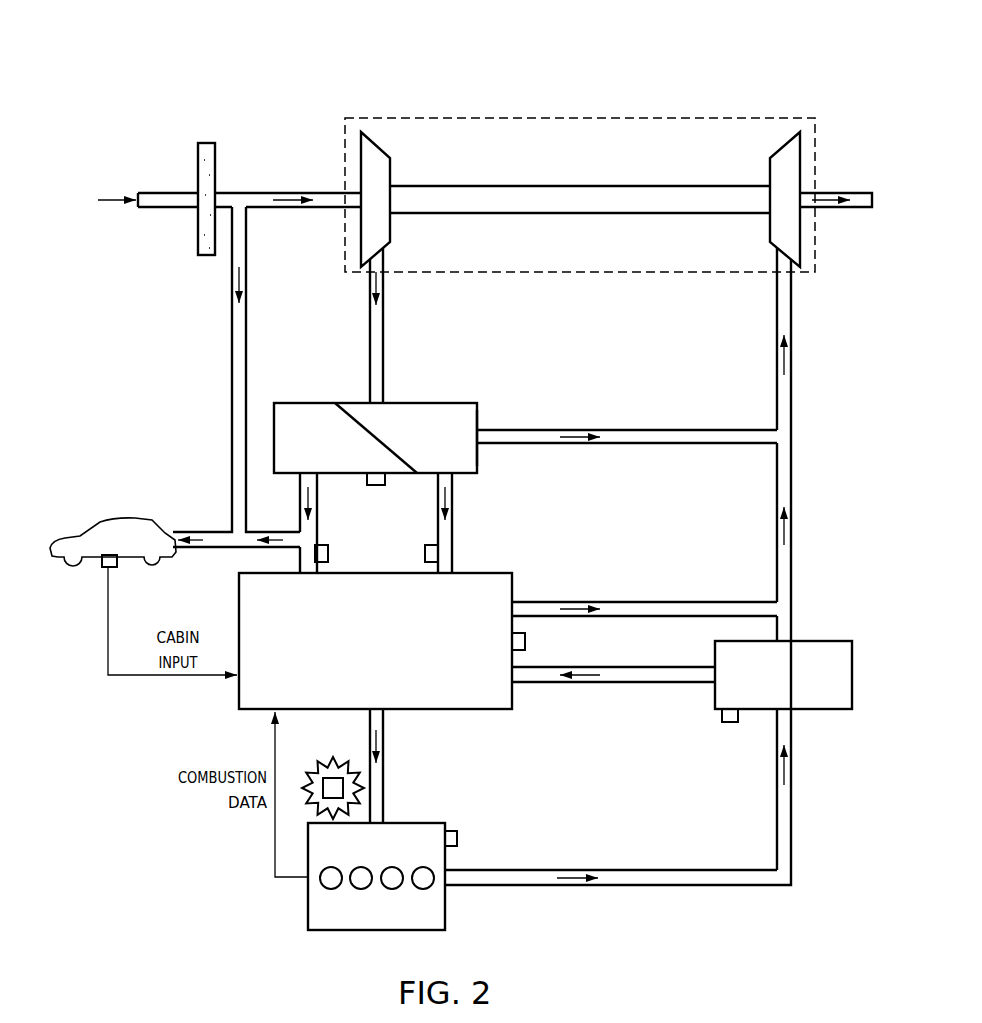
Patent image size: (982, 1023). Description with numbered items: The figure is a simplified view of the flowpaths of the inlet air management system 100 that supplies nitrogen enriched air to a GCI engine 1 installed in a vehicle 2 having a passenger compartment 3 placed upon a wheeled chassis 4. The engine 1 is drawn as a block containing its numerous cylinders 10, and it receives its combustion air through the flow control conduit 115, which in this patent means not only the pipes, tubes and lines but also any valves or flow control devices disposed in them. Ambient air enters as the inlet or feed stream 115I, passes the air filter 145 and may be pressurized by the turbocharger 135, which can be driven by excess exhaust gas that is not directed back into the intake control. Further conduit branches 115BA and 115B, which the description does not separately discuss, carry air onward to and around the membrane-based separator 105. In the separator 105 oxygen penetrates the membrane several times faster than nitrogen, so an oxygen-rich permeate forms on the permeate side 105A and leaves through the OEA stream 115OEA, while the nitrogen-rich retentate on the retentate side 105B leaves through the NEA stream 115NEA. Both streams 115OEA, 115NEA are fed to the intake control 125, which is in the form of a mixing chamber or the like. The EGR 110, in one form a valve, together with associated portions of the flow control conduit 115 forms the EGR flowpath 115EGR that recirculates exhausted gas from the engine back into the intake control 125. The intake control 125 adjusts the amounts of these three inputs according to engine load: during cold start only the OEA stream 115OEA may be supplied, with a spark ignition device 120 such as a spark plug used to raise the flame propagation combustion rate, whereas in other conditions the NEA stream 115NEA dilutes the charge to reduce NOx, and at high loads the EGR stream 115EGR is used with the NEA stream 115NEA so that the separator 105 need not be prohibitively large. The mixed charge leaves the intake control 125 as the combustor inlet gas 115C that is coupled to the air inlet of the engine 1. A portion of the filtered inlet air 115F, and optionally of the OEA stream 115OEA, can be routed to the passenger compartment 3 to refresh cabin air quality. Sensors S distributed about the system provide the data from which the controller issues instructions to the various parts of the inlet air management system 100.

The inlet air management system 100 is at (205, 80).
The inlet feed stream 115I is at (138, 207).
The air filter 145 is at (198, 157).
The turbocharger 135 is at (527, 118).
The filtered inlet air 115F is at (246, 352).
The boosted air passage 115BA is at (383, 323).
The membrane-based separator 105 is at (375, 416).
The permeate side 105A is at (332, 431).
The retentate side 105B is at (458, 447).
The bypass air passage 115B is at (633, 430).
The OEA stream 115OEA is at (317, 490).
The NEA stream 115NEA is at (452, 500).
The intake control 125 is at (497, 573).
The EGR flowpath 115EGR is at (617, 682).
The EGR 110 is at (828, 641).
The combustor inlet gas 115C is at (383, 752).
The spark ignition device 120 is at (360, 800).
The GCI engine 1 is at (308, 907).
The cylinders 10 is at (422, 889).
The flow control conduit 115 is at (606, 870).
The vehicle 2 is at (132, 484).
The passenger compartment 3 is at (124, 549).
The wheeled chassis 4 is at (72, 558).
The sensors S is at (376, 485).